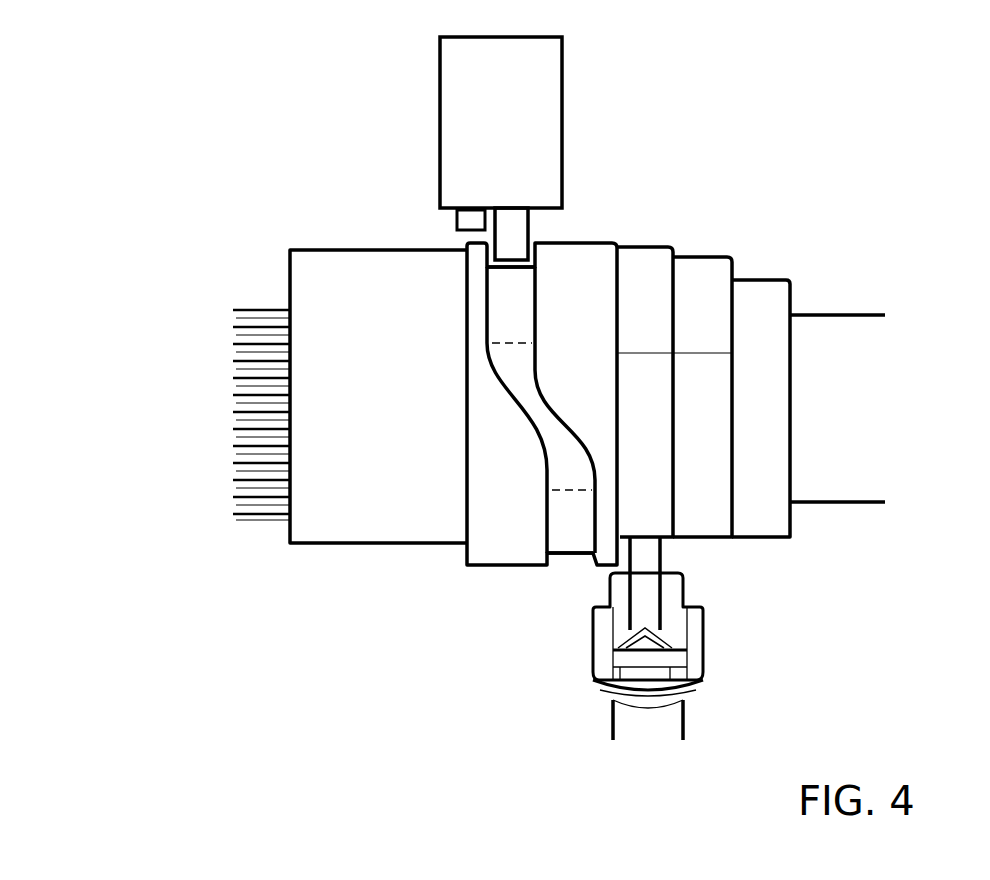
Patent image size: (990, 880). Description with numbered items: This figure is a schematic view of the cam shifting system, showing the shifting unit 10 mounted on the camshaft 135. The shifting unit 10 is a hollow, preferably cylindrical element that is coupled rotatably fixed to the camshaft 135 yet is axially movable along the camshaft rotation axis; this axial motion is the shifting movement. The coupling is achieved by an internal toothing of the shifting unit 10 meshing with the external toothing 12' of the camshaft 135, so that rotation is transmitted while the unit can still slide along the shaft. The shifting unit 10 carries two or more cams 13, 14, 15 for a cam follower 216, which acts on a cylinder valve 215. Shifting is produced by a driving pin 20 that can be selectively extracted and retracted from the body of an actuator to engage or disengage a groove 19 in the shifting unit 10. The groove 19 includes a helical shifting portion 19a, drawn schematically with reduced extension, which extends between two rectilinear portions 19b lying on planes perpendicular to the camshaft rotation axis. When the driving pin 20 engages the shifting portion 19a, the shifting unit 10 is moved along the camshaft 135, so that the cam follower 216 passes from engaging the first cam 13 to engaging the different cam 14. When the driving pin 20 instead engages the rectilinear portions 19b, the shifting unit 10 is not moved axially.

The shifting unit 10 is at (328, 510).
The external toothing 12' is at (207, 340).
The first cam 13 is at (638, 247).
The cam 14 is at (698, 257).
The cam 15 is at (755, 287).
The camshaft 135 is at (850, 310).
The groove 19 is at (517, 443).
The shifting portion 19a is at (530, 408).
The rectilinear portions 19b is at (510, 296).
The driving pin 20 is at (468, 218).
The cylinder valve 215 is at (697, 721).
The cam follower 216 is at (693, 623).